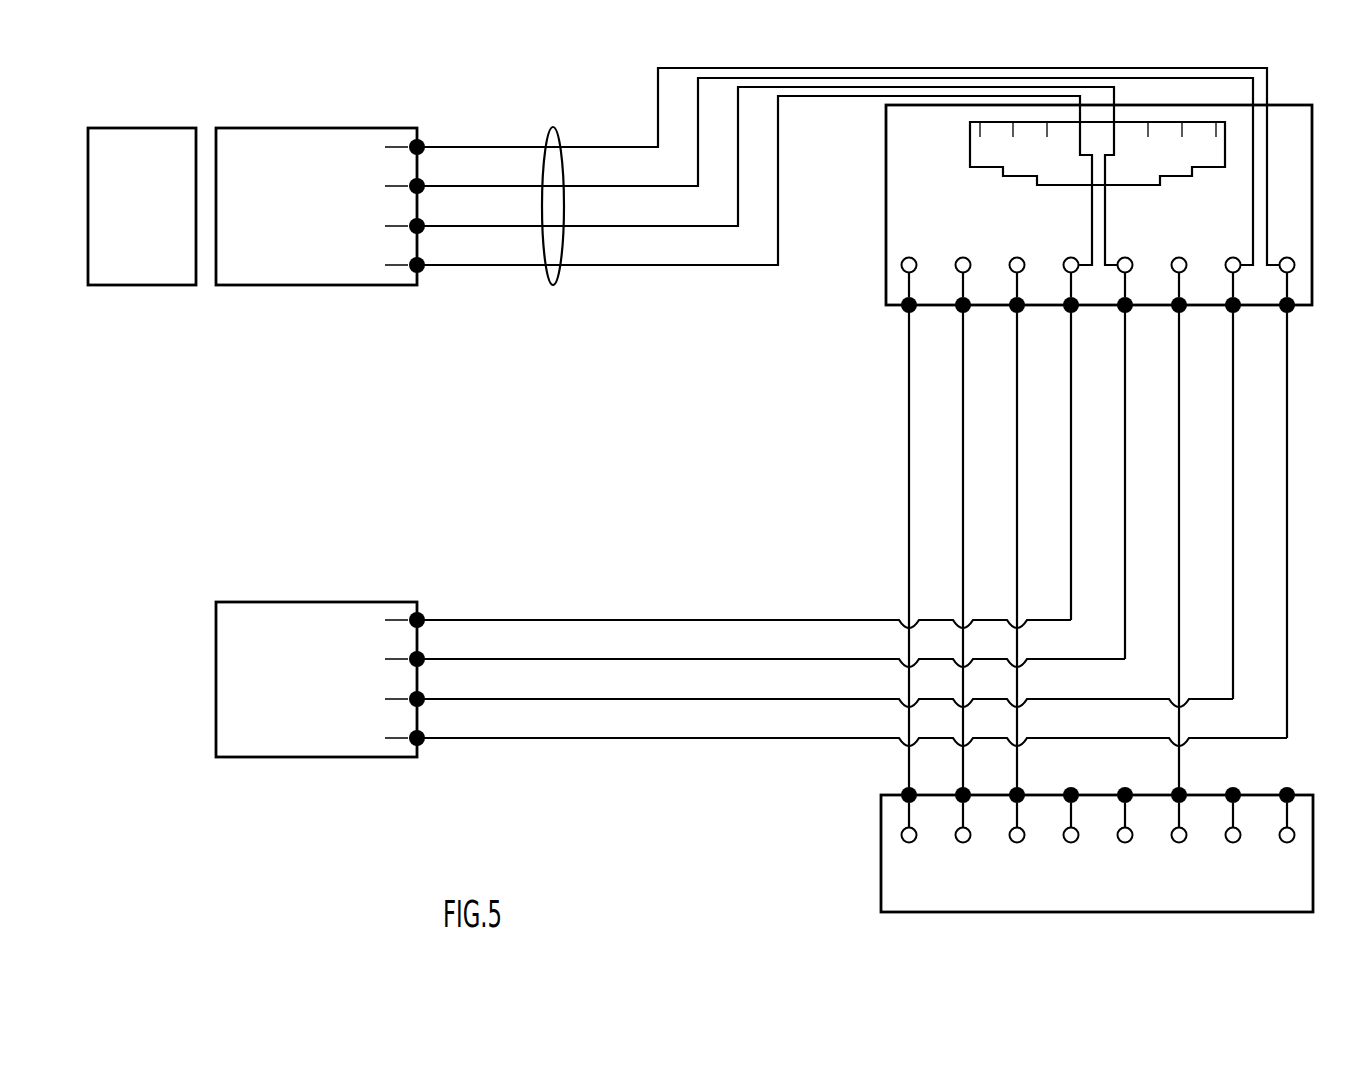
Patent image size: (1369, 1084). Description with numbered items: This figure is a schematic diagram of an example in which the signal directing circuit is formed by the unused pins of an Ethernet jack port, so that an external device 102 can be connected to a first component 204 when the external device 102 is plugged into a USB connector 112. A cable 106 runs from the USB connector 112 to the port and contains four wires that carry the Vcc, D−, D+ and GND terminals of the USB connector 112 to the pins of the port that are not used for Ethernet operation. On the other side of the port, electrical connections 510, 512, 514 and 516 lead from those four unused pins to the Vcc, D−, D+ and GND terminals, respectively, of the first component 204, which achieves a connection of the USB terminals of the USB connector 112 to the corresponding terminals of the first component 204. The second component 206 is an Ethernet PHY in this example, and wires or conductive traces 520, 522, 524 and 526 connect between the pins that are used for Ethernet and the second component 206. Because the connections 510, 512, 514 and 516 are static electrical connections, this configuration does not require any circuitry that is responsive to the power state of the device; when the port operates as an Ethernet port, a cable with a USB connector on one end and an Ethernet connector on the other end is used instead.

The external device 102 is at (168, 287).
The USB connector 112 is at (313, 287).
The cable 106 is at (547, 271).
The wire or conductive trace 520 is at (908, 410).
The wire or conductive trace 522 is at (962, 410).
The wire or conductive trace 524 is at (1016, 410).
The electrical connection 510 is at (1070, 410).
The electrical connection 512 is at (1124, 410).
The wire or conductive trace 526 is at (1178, 410).
The electrical connection 514 is at (1232, 410).
The electrical connection 516 is at (1286, 410).
The first component 204 is at (310, 758).
The second component 206 is at (880, 866).